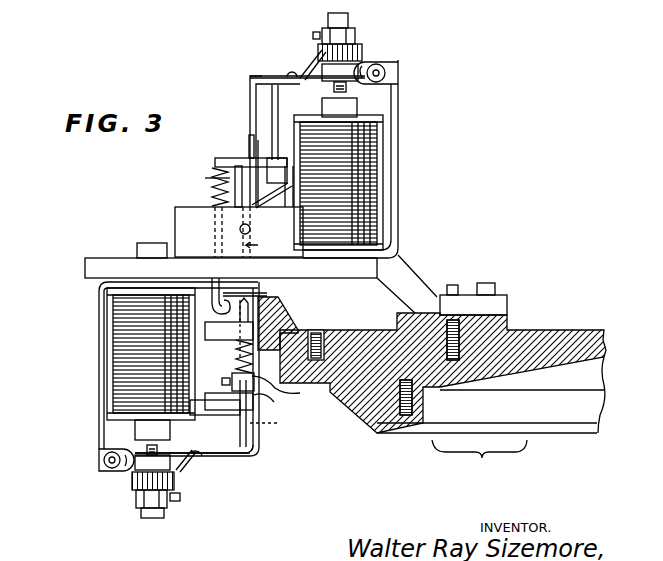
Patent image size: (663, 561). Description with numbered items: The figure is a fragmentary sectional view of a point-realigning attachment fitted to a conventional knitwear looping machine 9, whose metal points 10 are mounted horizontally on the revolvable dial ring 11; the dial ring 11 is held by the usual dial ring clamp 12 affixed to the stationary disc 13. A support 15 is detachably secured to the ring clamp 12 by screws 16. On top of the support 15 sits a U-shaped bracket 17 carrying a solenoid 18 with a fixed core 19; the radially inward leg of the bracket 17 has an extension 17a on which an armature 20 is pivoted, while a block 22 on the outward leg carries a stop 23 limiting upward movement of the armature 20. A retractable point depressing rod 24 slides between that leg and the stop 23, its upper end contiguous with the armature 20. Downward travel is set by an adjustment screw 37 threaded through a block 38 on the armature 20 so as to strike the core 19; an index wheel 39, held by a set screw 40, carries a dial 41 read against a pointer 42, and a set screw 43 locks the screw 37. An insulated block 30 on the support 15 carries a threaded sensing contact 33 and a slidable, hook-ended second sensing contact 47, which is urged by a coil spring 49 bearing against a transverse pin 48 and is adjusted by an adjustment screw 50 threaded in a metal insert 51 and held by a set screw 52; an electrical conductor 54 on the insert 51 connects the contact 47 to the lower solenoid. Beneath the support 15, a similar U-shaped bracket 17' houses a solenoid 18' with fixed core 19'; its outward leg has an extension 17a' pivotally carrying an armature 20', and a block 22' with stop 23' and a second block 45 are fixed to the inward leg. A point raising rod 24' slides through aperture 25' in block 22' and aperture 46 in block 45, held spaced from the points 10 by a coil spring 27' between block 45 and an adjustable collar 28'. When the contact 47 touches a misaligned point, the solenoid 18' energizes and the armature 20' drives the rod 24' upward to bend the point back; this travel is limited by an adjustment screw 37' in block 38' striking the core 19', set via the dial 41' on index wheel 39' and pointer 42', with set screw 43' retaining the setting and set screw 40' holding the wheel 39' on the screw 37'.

The knitwear looping machine 9 is at (479, 463).
The metal points 10 is at (246, 301).
The dial ring 11 is at (352, 332).
The dial ring clamp 12 is at (500, 320).
The stationary disc 13 is at (572, 333).
The support 15 is at (410, 272).
The screws 16 is at (481, 283).
The U-shaped bracket 17 is at (345, 159).
The extension 17a is at (397, 68).
The solenoid 18 is at (367, 182).
The fixed core 19 is at (356, 102).
The armature 20 is at (307, 57).
The block 22 is at (233, 155).
The stop 23 is at (231, 62).
The point depressing rod 24 is at (231, 179).
The electrically insulated block 30 is at (178, 240).
The sensing contact 33 is at (222, 245).
The adjustment screw 37 is at (365, 14).
The block 38 is at (324, 88).
The index wheel 39 is at (361, 30).
The set screw 40 is at (303, 23).
The dial 41 is at (358, 47).
The pointer 42 is at (301, 61).
The set screw 43 is at (392, 56).
The second block 45 is at (228, 329).
The aperture 46 is at (238, 355).
The second sensing contact 47 is at (220, 170).
The transverse pin 48 is at (210, 182).
The coil spring 49 is at (208, 197).
The adjustment screw 50 is at (222, 158).
The metal insert 51 is at (273, 246).
The set screw 52 is at (252, 230).
The electrical conductor 54 is at (264, 210).
The U-shaped bracket 17' is at (144, 369).
The extension 17a' is at (89, 461).
The solenoid 18' is at (119, 358).
The fixed core 19' is at (140, 432).
The armature 20' is at (192, 442).
The block 22' is at (215, 416).
The stop 23' is at (277, 461).
The point raising rod 24' is at (275, 417).
The aperture 25' is at (282, 426).
The coil spring 27' is at (284, 390).
The adjustable collar 28' is at (285, 408).
The adjustment screw 37' is at (197, 279).
The block 38' is at (183, 468).
The index wheel 39' is at (126, 514).
The set screw 40' is at (206, 269).
The dial 41' is at (119, 496).
The pointer 42' is at (210, 480).
The set screw 43' is at (84, 478).